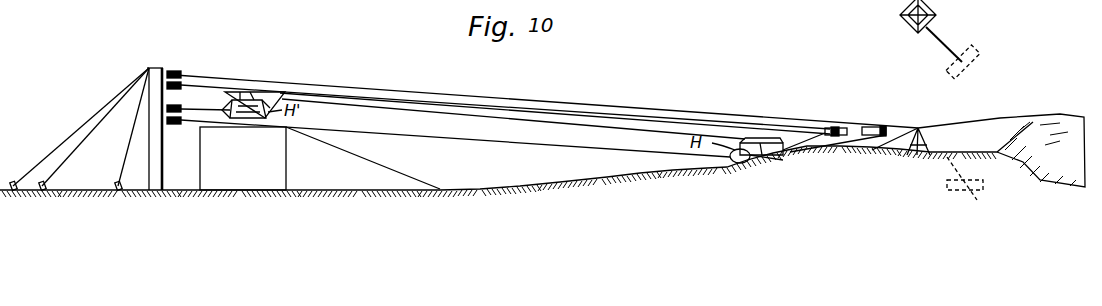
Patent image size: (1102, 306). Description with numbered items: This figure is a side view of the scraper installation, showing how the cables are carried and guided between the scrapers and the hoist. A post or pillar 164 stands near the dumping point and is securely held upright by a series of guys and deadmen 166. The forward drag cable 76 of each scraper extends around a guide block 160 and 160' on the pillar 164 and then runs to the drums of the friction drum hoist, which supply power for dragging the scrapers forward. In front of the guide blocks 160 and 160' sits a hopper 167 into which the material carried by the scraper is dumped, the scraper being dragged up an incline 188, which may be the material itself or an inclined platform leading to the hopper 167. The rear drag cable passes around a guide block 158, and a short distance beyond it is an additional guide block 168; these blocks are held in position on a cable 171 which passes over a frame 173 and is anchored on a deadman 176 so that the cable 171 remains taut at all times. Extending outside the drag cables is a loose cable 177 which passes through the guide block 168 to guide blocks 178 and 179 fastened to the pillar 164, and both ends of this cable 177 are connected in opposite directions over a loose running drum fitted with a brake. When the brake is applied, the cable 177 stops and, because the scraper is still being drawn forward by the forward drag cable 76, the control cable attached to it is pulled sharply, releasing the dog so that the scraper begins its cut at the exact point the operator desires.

The post or pillar 164 is at (161, 65).
The guys and deadmen 166 is at (82, 128).
The guide block 178 is at (175, 72).
The guide block 179 is at (185, 85).
The guide block 160 is at (210, 83).
The guide block 160' is at (182, 139).
The cable 177 is at (474, 97).
The forward drag cable 76 is at (597, 149).
The guide block 158 is at (837, 125).
The cable 171 is at (898, 125).
The frame 173 is at (918, 127).
The guide block 168 is at (873, 147).
The deadmen 176 is at (980, 63).
The hopper 167 is at (287, 161).
The incline 188 is at (398, 171).